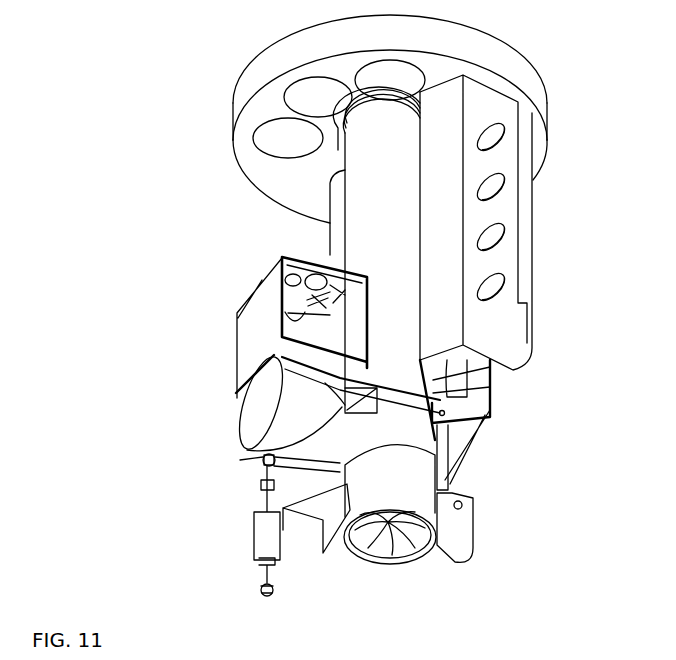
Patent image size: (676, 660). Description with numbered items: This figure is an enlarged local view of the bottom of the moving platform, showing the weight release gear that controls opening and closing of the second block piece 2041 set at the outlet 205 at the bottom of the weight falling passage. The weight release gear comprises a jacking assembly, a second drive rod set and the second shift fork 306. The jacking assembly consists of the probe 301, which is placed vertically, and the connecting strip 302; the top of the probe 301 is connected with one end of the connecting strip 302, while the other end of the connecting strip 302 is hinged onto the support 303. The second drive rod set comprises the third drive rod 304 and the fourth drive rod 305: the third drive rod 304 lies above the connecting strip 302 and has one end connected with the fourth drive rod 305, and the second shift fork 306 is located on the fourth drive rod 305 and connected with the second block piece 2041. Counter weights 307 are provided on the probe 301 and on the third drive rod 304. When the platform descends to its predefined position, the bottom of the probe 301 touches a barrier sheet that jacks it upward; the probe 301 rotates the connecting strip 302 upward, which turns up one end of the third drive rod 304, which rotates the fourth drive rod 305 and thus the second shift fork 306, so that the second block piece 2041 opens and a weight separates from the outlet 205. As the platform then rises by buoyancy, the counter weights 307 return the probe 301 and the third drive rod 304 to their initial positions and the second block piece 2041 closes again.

The second shift fork 306 is at (229, 313).
The second block piece 2041 is at (192, 298).
The outlet 205 is at (251, 400).
The connecting strip 302 is at (210, 451).
The counter weight 307 is at (352, 504).
The probe 301 is at (171, 572).
The fourth drive rod 305 is at (530, 394).
The third drive rod 304 is at (542, 447).
The support 303 is at (535, 537).